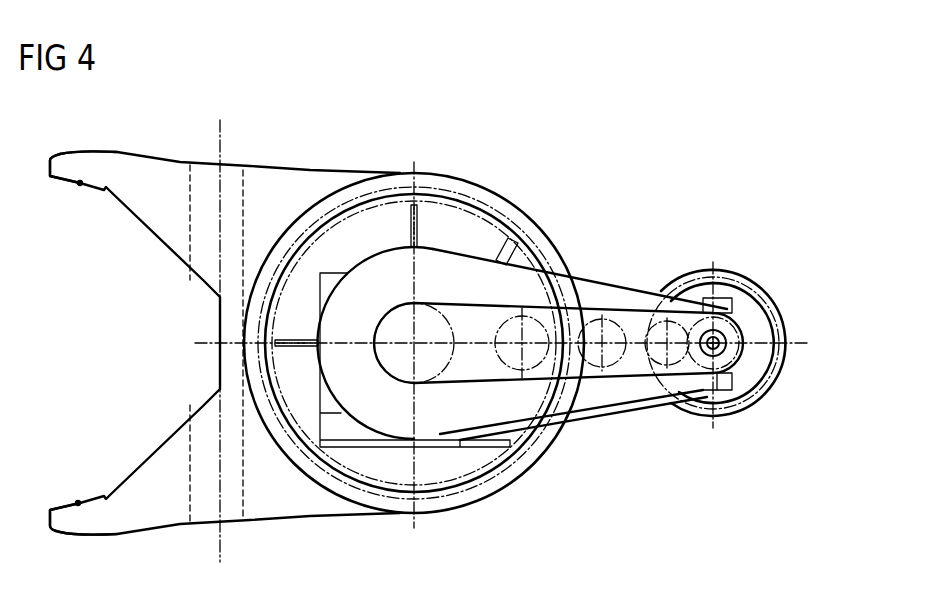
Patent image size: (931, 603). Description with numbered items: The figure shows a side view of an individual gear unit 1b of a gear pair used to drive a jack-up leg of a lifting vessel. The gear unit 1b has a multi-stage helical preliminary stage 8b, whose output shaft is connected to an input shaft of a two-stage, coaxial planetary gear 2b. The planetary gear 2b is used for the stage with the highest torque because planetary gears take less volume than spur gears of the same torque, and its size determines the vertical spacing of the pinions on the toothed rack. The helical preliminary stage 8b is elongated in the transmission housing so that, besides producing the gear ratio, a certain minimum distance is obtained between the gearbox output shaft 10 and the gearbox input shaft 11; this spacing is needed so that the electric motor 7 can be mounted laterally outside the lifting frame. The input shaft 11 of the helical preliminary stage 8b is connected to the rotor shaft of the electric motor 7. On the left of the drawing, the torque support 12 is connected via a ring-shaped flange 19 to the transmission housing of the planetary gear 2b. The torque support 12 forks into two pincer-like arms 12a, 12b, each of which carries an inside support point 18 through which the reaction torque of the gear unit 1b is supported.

The gear unit 1b is at (666, 146).
The torque support 12 is at (281, 510).
The pincer-like arm 12a is at (78, 166).
The pincer-like arm 12b is at (78, 522).
The support point 18 is at (80, 185).
The planetary gear 2b is at (497, 203).
The ring-shaped flange 19 is at (513, 485).
The helical preliminary stage 8b is at (627, 283).
The gearbox output shaft 10 is at (411, 357).
The electric motor 7 is at (727, 272).
The input shaft 11 is at (733, 334).